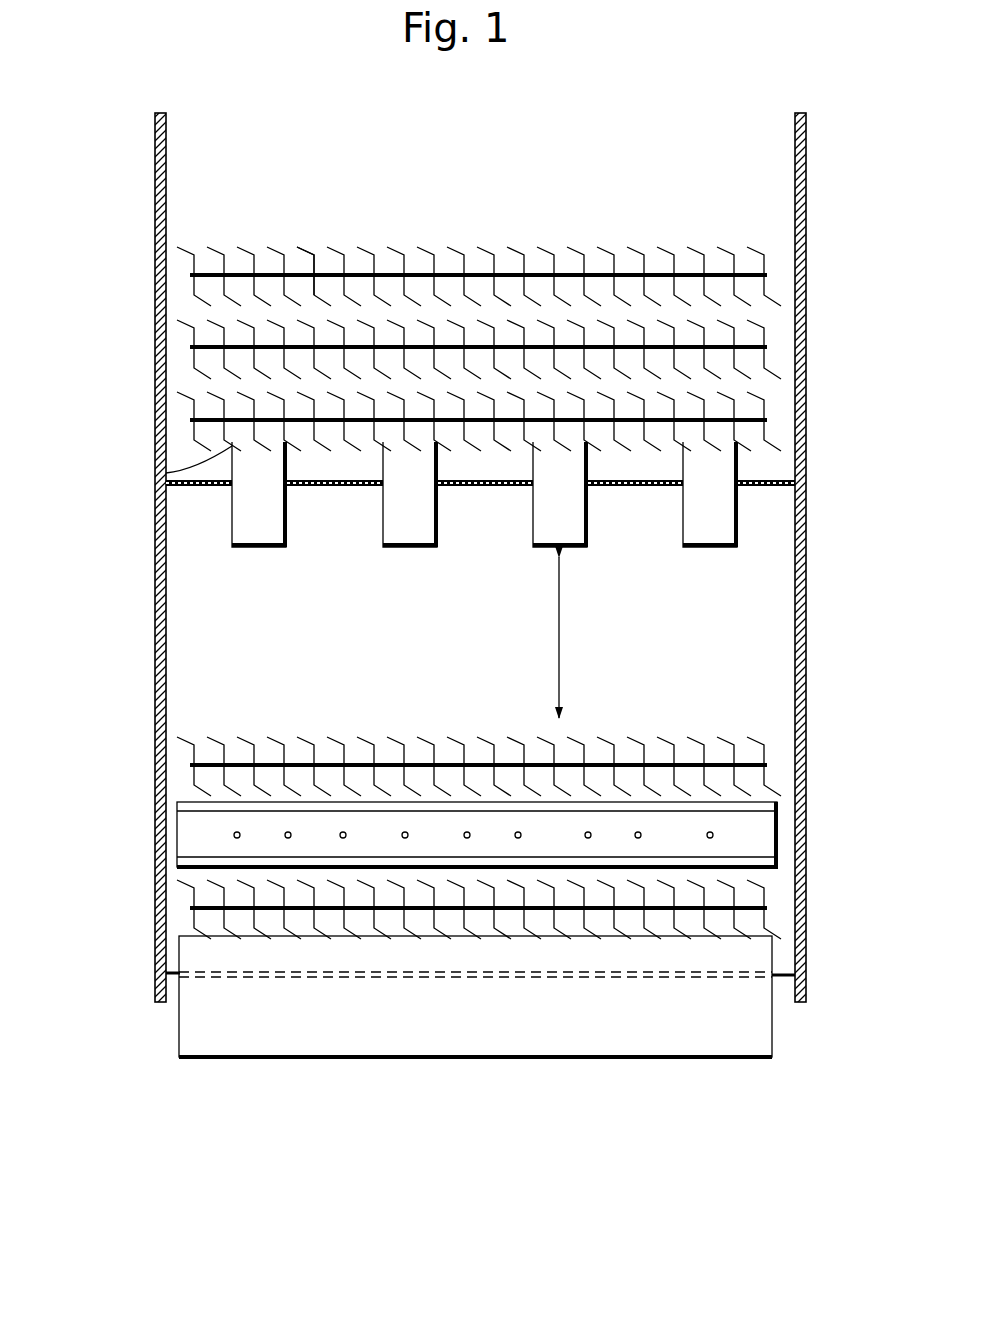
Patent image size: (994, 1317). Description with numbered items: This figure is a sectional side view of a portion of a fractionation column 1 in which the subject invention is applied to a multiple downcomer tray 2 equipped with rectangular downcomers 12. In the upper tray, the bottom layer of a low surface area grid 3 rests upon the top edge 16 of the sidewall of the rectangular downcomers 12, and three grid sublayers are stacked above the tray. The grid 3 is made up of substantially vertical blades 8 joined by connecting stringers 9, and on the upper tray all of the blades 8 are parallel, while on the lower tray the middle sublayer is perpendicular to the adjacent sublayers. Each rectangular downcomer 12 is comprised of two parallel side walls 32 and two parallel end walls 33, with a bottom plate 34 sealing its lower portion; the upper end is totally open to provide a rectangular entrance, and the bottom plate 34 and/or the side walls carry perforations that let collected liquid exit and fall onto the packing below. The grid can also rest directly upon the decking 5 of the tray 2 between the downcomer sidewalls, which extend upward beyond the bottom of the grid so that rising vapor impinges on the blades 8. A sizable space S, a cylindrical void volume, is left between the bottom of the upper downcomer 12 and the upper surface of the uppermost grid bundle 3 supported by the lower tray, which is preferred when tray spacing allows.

The housing wall 1 is at (150, 522).
The multiple downcomer fractionation tray 2 is at (769, 479).
The low surface area grid 3 is at (770, 263).
The decking 5 is at (612, 487).
The blades 8 is at (305, 252).
The connecting stringers 9 is at (244, 272).
The rectangular downcomer 12 is at (300, 511).
The top edge 16 is at (166, 473).
The side walls 32 is at (533, 516).
The end walls 33 is at (244, 509).
The bottom plate 34 is at (262, 549).
The space S is at (559, 637).